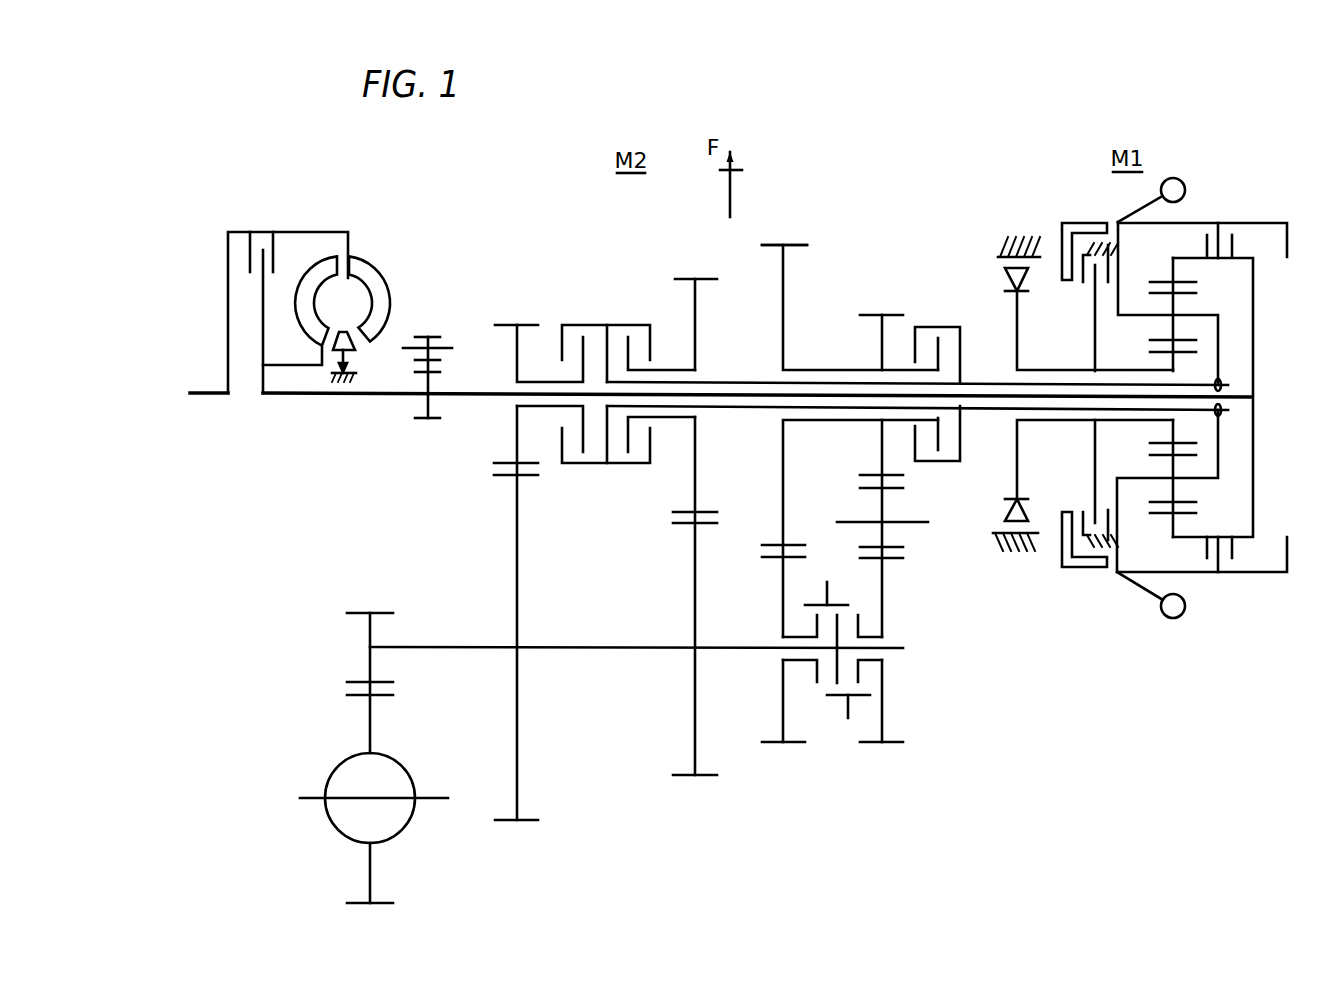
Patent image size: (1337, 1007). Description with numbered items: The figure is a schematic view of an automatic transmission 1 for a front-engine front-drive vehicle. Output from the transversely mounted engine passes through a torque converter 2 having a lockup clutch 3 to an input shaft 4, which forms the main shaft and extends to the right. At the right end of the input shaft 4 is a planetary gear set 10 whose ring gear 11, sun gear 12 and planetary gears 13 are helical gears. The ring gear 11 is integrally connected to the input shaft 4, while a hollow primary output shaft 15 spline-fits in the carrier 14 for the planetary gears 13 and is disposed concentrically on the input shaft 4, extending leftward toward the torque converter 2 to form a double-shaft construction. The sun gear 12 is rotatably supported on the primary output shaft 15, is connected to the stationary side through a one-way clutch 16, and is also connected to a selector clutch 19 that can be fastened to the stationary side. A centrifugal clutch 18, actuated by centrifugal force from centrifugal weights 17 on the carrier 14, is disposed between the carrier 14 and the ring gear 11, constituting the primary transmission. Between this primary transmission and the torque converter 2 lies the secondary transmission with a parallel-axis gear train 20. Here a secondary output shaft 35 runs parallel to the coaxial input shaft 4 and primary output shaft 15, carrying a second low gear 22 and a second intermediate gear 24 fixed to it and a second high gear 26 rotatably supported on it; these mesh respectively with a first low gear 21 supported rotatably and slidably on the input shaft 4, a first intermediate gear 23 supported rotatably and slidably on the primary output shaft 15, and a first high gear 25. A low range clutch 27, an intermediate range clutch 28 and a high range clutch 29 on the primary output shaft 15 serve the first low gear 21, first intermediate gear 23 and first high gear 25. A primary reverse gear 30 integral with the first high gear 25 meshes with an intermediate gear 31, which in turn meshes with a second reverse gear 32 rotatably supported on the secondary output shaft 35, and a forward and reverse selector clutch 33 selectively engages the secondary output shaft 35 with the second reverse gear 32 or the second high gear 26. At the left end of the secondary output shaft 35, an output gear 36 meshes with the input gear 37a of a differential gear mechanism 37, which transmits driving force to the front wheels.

The automatic transmission 1 is at (767, 226).
The torque converter 2 is at (383, 267).
The lockup clutch 3 is at (281, 254).
The input shaft 4 is at (465, 399).
The planetary gear set 10 is at (1269, 369).
The ring gear 11 is at (1178, 268).
The sun gear 12 is at (1173, 363).
The planetary gears 13 is at (1177, 303).
The carrier 14 is at (1140, 226).
The primary output shaft 15 is at (990, 383).
The one-way clutch 16 is at (997, 280).
The centrifugal weights 17 is at (1187, 188).
The centrifugal clutch 18 is at (1241, 242).
The selector clutch 19 is at (1082, 286).
The gear train 20 is at (671, 271).
The first low gear 21 is at (515, 350).
The second low gear 22 is at (515, 755).
The first intermediate gear 23 is at (697, 303).
The second intermediate gear 24 is at (693, 731).
The first high gear 25 is at (787, 283).
The second high gear 26 is at (783, 717).
The low range clutch 27 is at (572, 317).
The intermediate range clutch 28 is at (629, 317).
The high range clutch 29 is at (940, 321).
The primary reverse gear 30 is at (880, 337).
The intermediate gear 31 is at (883, 503).
The second reverse gear 32 is at (882, 710).
The forward and reverse selector clutch 33 is at (837, 731).
The secondary output shaft 35 is at (600, 653).
The output gear 36 is at (368, 632).
The differential gear mechanism 37 is at (319, 781).
The input gear 37a is at (368, 877).